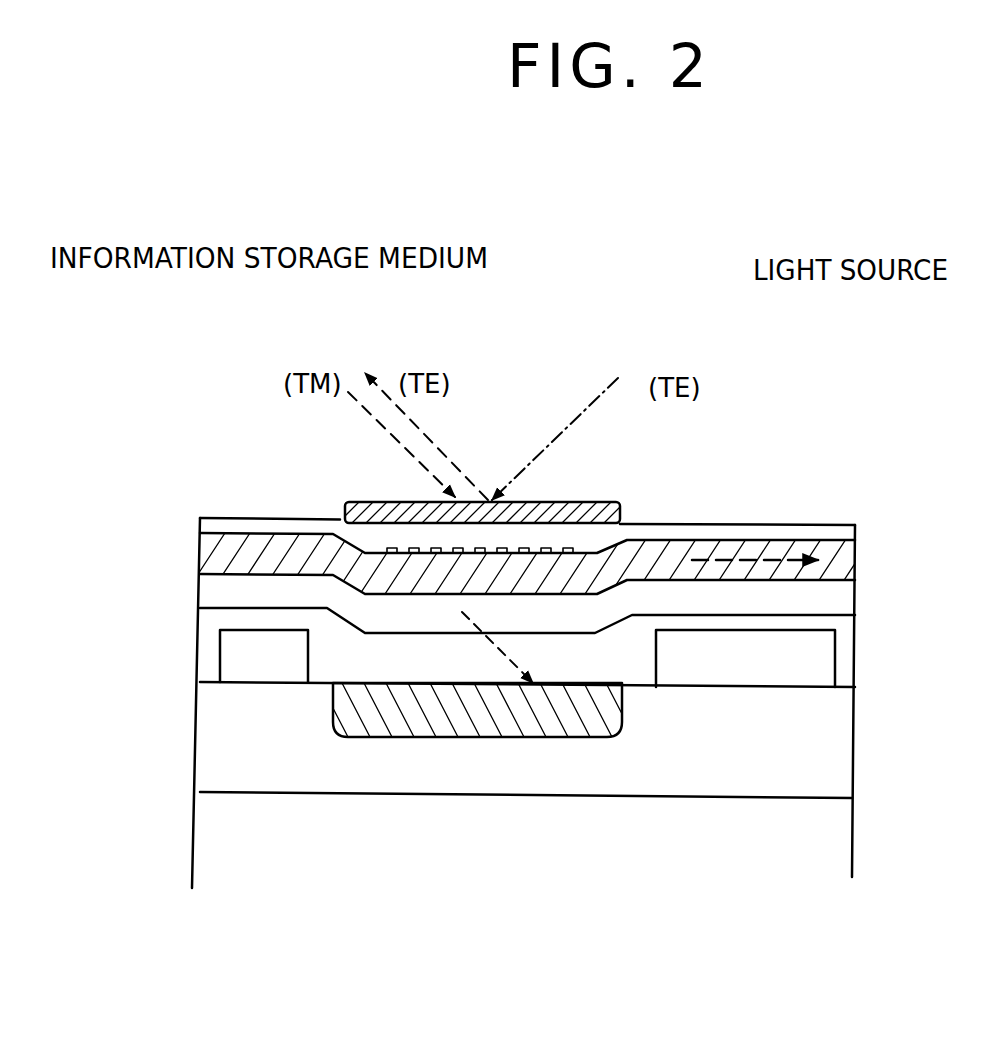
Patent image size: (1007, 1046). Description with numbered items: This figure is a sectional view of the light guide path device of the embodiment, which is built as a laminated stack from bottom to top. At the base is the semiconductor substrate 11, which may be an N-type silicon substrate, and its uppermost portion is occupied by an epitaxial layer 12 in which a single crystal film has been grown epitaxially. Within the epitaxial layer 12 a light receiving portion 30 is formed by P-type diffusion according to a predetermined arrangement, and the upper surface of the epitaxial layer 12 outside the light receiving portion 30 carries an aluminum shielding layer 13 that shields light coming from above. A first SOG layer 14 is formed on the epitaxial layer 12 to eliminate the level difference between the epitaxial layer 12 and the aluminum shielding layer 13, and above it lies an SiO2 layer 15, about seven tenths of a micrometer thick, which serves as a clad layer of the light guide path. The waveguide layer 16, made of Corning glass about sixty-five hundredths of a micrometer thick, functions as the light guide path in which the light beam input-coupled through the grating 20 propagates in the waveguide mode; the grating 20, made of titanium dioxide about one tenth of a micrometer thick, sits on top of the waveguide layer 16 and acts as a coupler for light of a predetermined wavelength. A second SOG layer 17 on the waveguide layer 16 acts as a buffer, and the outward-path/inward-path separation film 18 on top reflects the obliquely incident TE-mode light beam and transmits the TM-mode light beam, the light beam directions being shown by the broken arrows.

The semiconductor substrate 11 is at (863, 690).
The epitaxial layer 12 is at (205, 735).
The aluminum shielding layer 13 is at (270, 668).
The first SOG layer 14 is at (205, 647).
The SiO2 layer 15 is at (205, 593).
The waveguide layer 16 is at (205, 562).
The second SOG layer 17 is at (205, 530).
The outward-path/inward-path separation film 18 is at (362, 502).
The grating 20 is at (567, 543).
The light receiving portion 30 is at (615, 732).